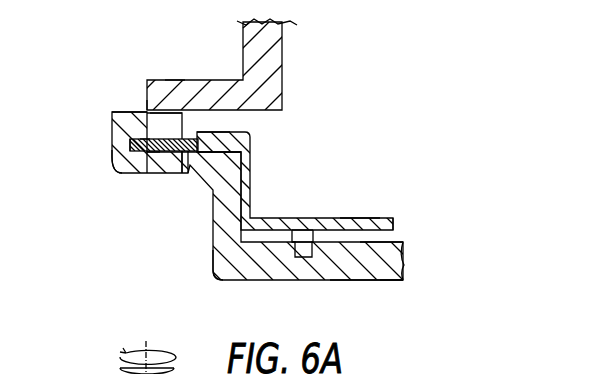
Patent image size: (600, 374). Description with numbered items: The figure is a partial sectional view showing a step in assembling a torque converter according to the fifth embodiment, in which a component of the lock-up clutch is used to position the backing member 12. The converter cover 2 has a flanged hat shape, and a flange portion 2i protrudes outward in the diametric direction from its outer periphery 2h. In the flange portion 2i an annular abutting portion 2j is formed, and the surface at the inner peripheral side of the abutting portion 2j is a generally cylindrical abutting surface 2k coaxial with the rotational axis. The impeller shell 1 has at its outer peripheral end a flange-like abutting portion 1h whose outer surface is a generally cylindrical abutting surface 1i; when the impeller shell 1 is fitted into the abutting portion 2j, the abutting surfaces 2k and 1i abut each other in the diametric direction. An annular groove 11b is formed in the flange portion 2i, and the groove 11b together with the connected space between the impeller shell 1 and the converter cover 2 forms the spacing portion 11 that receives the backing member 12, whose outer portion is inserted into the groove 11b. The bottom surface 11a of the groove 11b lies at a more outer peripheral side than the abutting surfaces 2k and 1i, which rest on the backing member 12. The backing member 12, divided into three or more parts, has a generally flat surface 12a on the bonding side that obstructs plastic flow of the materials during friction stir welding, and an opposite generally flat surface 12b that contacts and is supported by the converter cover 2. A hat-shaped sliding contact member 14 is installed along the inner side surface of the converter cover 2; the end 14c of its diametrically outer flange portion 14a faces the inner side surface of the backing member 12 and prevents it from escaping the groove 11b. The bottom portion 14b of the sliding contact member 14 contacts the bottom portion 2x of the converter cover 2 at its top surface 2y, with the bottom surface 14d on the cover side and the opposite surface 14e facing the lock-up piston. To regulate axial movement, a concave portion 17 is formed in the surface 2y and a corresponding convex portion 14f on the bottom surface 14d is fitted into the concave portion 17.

The impeller shell 1 is at (262, 90).
The abutting portion 1h is at (172, 108).
The abutting surface 1i is at (146, 118).
The converter cover 2 is at (133, 175).
The outer periphery 2h is at (213, 255).
The flange portion 2i is at (118, 160).
The abutting portion 2j is at (130, 112).
The abutting surface 2k is at (153, 158).
The bottom portion 2x is at (363, 273).
The top surface 2y is at (395, 240).
The spacing portion 11 is at (145, 160).
The bottom surface 11a is at (143, 126).
The annular groove 11b is at (130, 146).
The backing member 12 is at (172, 153).
The generally flat surface 12a is at (157, 128).
The generally flat surface 12b is at (190, 165).
The sliding contact member 14 is at (336, 216).
The flange portion 14a is at (219, 149).
The bottom portion 14b is at (357, 228).
The end 14c is at (205, 124).
The bottom surface 14d is at (392, 285).
The opposite surface 14e is at (382, 217).
The convex portion 14f is at (304, 250).
The concave portion 17 is at (297, 283).